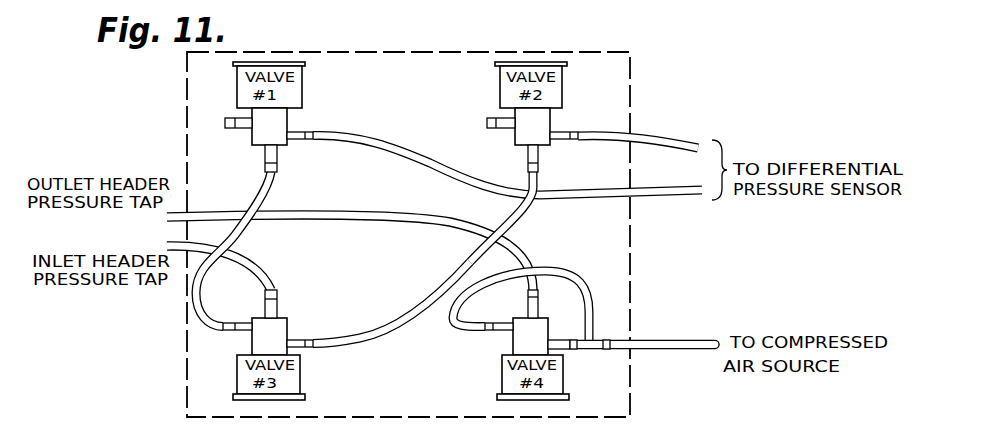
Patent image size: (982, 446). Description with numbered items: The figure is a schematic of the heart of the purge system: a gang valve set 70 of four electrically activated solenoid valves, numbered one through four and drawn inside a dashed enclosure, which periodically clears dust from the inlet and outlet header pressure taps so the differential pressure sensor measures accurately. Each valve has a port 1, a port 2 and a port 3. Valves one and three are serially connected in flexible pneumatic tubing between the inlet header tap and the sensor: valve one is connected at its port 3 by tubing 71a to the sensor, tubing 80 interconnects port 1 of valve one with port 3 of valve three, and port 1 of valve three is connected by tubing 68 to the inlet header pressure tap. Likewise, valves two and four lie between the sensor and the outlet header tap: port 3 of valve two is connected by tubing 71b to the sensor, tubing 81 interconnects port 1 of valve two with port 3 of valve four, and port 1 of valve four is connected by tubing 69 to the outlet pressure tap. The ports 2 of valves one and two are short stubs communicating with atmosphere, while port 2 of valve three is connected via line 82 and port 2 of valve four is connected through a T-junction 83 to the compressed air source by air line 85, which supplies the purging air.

The gang valve set 70 is at (421, 52).
The tubing 69 is at (378, 211).
The tubing 68 is at (249, 262).
The tubing 80 is at (263, 190).
The tubing 81 is at (514, 210).
The line 82 is at (389, 322).
The T-junction 83 is at (588, 351).
The air line 85 is at (688, 322).
The tubing 71a is at (646, 199).
The tubing 71b is at (645, 137).
The port 1 is at (409, 231).
The port 2 is at (414, 233).
The port 3 is at (402, 220).